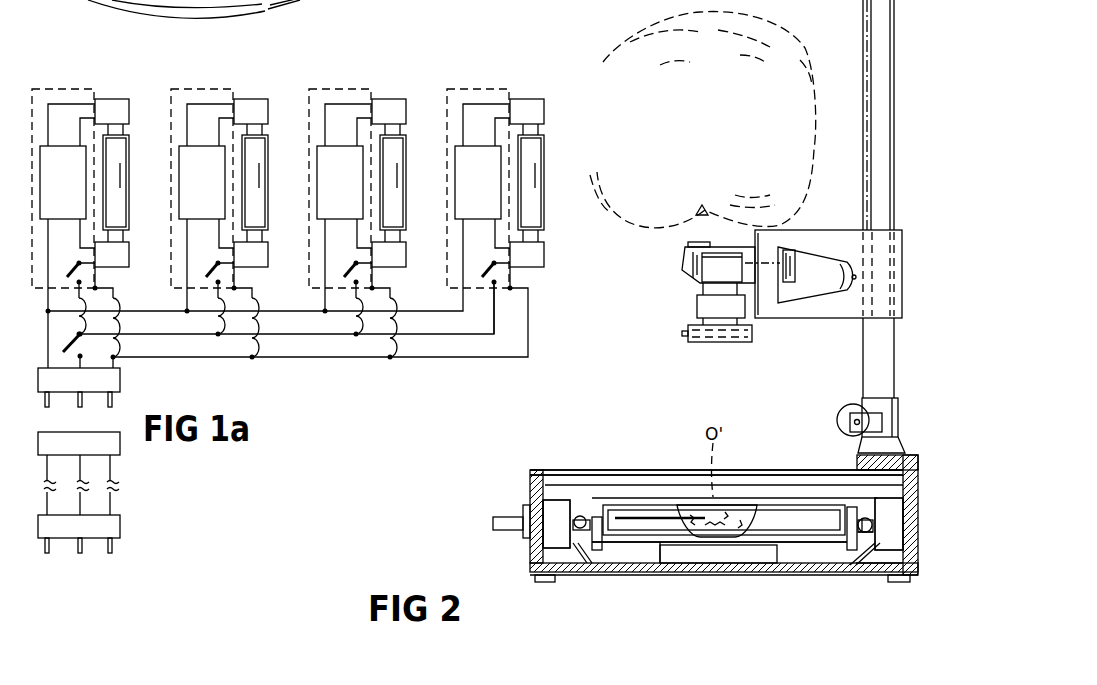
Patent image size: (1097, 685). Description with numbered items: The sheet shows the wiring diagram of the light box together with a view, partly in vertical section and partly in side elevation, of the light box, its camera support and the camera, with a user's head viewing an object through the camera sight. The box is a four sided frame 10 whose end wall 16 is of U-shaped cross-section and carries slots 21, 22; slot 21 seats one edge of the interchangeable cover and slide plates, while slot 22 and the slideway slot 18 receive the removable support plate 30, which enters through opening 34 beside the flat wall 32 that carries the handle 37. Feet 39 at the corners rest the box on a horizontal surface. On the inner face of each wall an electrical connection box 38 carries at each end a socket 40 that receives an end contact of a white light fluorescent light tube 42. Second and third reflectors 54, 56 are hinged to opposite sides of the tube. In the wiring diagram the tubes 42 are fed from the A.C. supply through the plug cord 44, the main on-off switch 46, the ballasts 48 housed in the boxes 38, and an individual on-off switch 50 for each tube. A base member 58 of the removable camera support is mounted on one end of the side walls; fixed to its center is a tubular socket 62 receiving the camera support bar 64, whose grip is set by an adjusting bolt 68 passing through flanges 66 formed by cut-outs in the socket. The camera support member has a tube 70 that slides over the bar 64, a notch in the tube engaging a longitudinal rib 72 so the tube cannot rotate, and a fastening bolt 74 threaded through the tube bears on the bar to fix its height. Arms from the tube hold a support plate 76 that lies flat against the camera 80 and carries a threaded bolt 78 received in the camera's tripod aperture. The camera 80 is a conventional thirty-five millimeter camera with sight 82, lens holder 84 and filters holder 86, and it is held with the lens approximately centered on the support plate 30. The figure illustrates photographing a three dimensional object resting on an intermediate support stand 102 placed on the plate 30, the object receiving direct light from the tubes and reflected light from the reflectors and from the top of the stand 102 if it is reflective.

In FIG. 2, the frame 10 is at (526, 491).
In FIG. 2, the end wall 16 is at (920, 541).
In FIG. 2, the slot 18 is at (533, 478).
In FIG. 2, the slot 21 is at (862, 516).
In FIG. 2, the slot 22 is at (877, 570).
In FIG. 2, the support plate 30 is at (772, 570).
In FIG. 2, the wall 32 is at (535, 547).
In FIG. 2, the opening 34 is at (531, 565).
In FIG. 2, the handle 37 is at (493, 524).
In FIG. 1A, the electrical connection box 38 is at (57, 88).
In FIG. 2, the electrical connection box 38 is at (530, 499).
In FIG. 2, the feet 39 is at (543, 583).
In FIG. 1A, the socket 40 is at (122, 118).
In FIG. 2, the socket 40 is at (577, 513).
In FIG. 1A, the fluorescent light tube 42 is at (117, 205).
In FIG. 2, the fluorescent light tube 42 is at (655, 526).
In FIG. 1A, the plug cord 44 is at (116, 471).
In FIG. 1A, the on-off switch 46 is at (83, 341).
In FIG. 1A, the ballast 48 is at (74, 194).
In FIG. 1A, the individual on-off switch 50 is at (84, 265).
In FIG. 2, the second reflector 54 is at (582, 512).
In FIG. 2, the third reflector 56 is at (590, 552).
In FIG. 2, the base member 58 is at (912, 460).
In FIG. 2, the tubular socket 62 is at (898, 415).
In FIG. 2, the camera support bar 64 is at (887, 90).
In FIG. 2, the flanges 66 is at (848, 422).
In FIG. 2, the adjusting bolt 68 is at (852, 405).
In FIG. 2, the tube 70 is at (903, 232).
In FIG. 2, the rib 72 is at (862, 80).
In FIG. 2, the fastening bolt 74 is at (827, 296).
In FIG. 2, the support plate 76 is at (757, 320).
In FIG. 2, the threaded bolt 78 is at (808, 248).
In FIG. 2, the camera 80 is at (677, 258).
In FIG. 2, the sight 82 is at (700, 268).
In FIG. 2, the lens holder 84 is at (700, 306).
In FIG. 2, the filters holder 86 is at (683, 334).
In FIG. 2, the intermediate support stand 102 is at (673, 543).